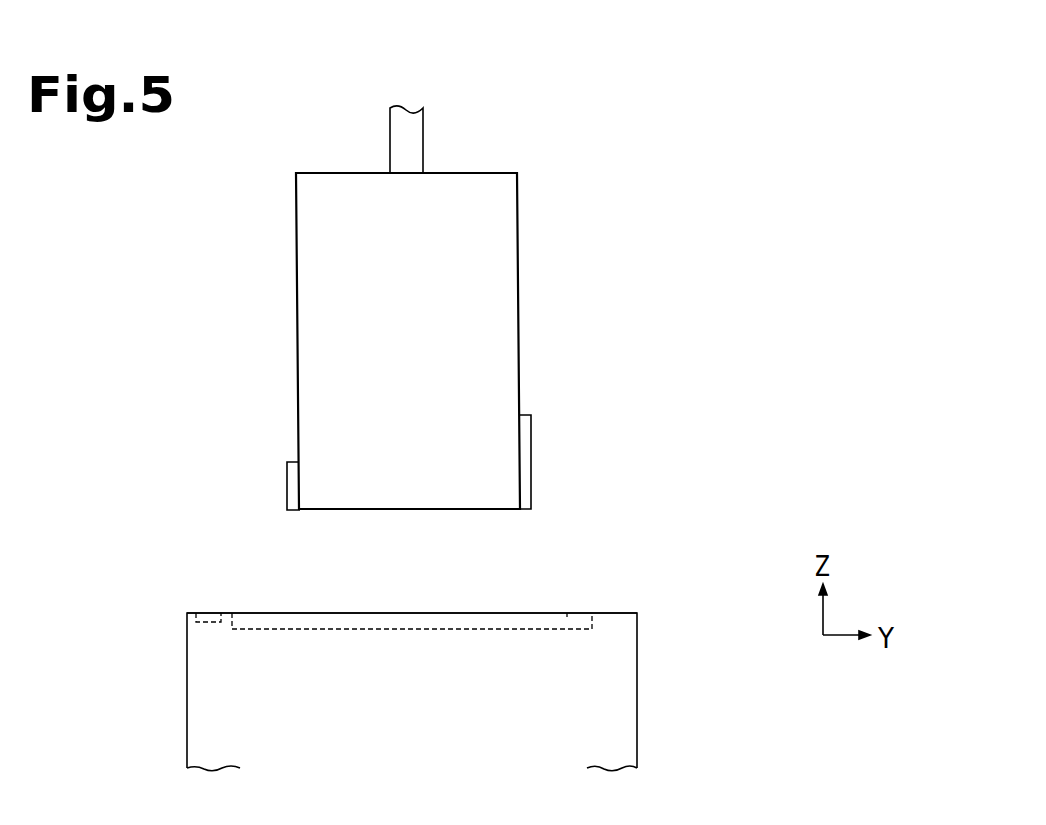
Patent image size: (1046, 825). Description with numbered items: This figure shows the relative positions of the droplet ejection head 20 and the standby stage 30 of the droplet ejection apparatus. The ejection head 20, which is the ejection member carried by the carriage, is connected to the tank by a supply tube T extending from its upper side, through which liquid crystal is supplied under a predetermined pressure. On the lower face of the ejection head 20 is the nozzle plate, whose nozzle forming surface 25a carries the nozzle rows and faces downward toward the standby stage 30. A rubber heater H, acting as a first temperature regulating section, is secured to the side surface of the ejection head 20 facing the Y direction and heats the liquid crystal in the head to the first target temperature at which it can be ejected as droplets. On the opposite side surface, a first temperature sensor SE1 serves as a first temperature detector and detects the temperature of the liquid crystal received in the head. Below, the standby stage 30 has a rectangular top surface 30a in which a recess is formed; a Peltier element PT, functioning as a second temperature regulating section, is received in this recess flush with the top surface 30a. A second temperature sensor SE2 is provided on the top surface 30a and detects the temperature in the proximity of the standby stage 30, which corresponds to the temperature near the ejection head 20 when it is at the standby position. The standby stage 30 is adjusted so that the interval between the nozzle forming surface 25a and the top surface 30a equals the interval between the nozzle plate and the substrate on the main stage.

The droplet ejection head 20 is at (268, 288).
The supply tube T is at (423, 137).
The first temperature sensor SE1 is at (287, 482).
The rubber heater H is at (531, 430).
The nozzle forming surface 25a is at (480, 509).
The standby stage 30 is at (632, 645).
The top surface 30a is at (628, 610).
The second temperature sensor SE2 is at (212, 610).
The Peltier element PT is at (567, 612).